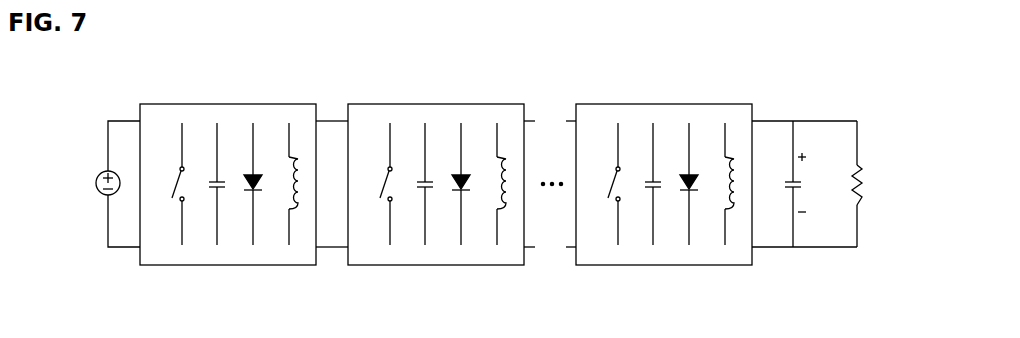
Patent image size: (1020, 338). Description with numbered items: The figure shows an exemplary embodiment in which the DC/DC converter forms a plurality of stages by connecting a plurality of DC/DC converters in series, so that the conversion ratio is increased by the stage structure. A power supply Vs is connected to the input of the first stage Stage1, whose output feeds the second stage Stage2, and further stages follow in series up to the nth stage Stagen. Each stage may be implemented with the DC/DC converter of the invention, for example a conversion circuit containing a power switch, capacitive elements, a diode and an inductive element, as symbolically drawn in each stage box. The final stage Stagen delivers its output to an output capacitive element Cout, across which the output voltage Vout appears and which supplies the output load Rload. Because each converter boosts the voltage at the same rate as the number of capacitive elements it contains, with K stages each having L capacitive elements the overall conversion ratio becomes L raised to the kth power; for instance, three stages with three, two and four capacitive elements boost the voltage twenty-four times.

The power supply Vs is at (100, 183).
The stage 1 Stage1 is at (228, 196).
The stage 2 Stage2 is at (436, 196).
The stage n Stagen is at (664, 196).
The output capacitive element Cout is at (779, 184).
The output voltage Vout is at (814, 182).
The output load Rload is at (873, 184).